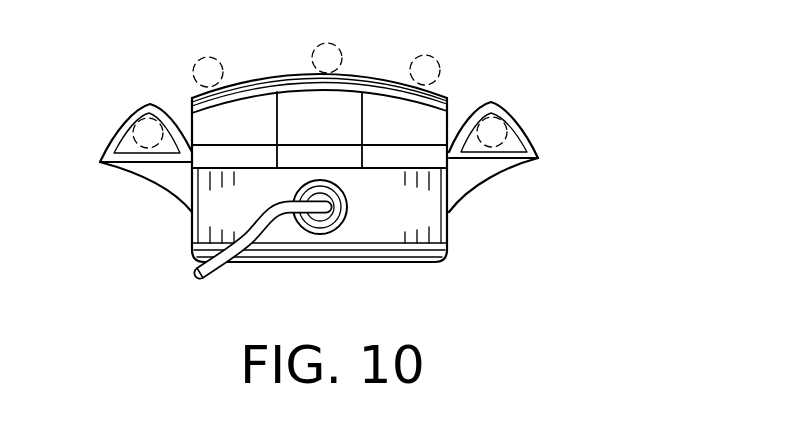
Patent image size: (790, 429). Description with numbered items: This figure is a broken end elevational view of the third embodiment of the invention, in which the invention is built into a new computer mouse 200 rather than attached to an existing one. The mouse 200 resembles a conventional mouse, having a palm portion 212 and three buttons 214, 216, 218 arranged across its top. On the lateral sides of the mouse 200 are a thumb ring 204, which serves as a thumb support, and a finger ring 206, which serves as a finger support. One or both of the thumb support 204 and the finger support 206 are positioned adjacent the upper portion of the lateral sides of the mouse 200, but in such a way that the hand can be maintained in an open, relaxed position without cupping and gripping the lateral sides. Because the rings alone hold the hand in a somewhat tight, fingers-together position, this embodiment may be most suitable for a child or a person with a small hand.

The mouse 200 is at (427, 286).
The thumb ring 204 is at (500, 106).
The finger ring 206 is at (146, 103).
The palm portion 212 is at (360, 76).
The button 214 is at (424, 141).
The button 216 is at (348, 141).
The button 218 is at (270, 141).